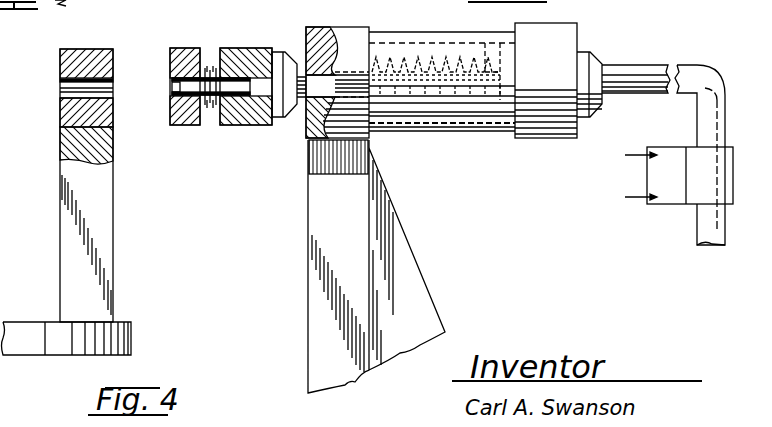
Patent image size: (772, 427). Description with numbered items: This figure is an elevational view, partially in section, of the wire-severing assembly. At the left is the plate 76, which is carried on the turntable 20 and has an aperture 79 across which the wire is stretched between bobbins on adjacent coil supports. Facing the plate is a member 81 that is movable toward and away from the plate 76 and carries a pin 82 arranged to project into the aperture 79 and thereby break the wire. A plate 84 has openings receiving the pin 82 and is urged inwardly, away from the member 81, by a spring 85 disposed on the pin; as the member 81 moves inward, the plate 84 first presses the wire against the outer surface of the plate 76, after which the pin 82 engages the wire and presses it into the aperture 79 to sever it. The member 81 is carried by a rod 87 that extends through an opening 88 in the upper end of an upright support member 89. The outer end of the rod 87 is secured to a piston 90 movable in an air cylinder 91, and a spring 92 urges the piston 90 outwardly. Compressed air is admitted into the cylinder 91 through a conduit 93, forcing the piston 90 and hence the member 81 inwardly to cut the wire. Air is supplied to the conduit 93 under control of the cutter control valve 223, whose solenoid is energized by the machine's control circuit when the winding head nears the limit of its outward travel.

The turntable 20 is at (128, 324).
The plate 76 is at (62, 111).
The aperture 79 is at (78, 80).
The member 81 is at (232, 126).
The pin 82 is at (190, 106).
The plate 84 is at (186, 62).
The spring 85 is at (213, 68).
The rod 87 is at (300, 78).
The opening 88 is at (336, 48).
The upright support member 89 is at (318, 198).
The piston 90 is at (485, 42).
The air cylinder 91 is at (476, 128).
The spring 92 is at (412, 55).
The conduit 93 is at (690, 70).
The cutter control valve 223 is at (675, 206).